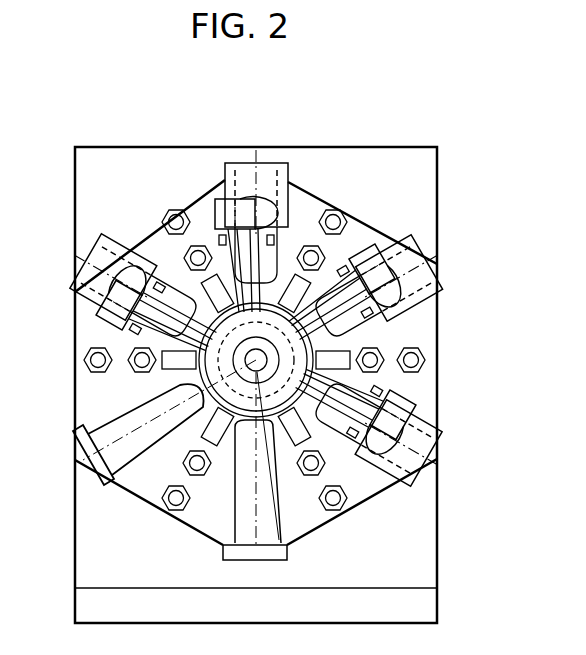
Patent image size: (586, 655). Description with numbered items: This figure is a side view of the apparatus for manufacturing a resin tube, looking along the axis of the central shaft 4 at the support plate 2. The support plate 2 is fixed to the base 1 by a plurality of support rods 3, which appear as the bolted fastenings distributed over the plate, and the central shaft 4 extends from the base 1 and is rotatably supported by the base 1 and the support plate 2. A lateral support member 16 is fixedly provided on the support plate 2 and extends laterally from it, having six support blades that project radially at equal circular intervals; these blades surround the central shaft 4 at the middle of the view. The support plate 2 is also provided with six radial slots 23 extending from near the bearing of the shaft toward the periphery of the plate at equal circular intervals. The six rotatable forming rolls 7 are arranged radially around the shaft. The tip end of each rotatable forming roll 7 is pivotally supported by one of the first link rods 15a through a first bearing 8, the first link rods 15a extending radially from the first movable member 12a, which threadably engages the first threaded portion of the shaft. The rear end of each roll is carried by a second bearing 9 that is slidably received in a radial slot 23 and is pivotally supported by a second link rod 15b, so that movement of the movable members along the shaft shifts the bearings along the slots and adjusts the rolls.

The base 1 is at (427, 160).
The support plate 2 is at (380, 230).
The support rods 3 is at (324, 256).
The central shaft 4 is at (312, 432).
The rotatable forming rolls 7 is at (262, 200).
The first bearing 8 is at (227, 208).
The second bearing 9 is at (290, 182).
The first movable member 12a is at (235, 500).
The first link rods 15a is at (400, 392).
The second link rods 15b is at (352, 470).
The lateral support member 16 is at (167, 370).
The radial slots 23 is at (115, 425).